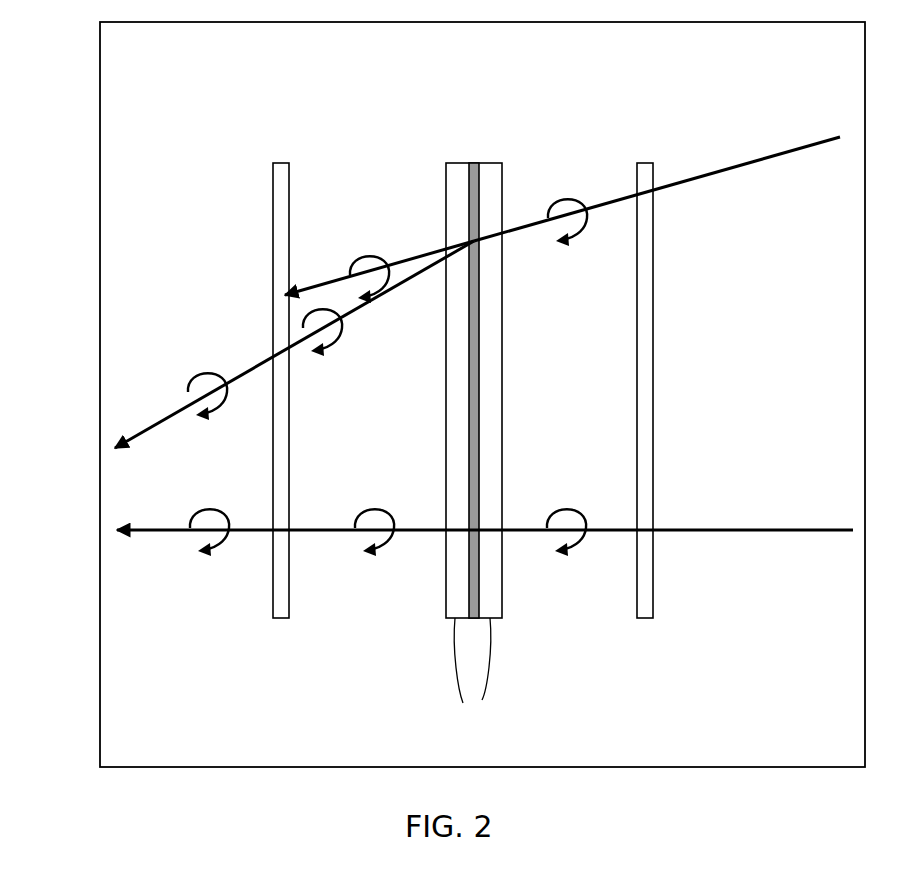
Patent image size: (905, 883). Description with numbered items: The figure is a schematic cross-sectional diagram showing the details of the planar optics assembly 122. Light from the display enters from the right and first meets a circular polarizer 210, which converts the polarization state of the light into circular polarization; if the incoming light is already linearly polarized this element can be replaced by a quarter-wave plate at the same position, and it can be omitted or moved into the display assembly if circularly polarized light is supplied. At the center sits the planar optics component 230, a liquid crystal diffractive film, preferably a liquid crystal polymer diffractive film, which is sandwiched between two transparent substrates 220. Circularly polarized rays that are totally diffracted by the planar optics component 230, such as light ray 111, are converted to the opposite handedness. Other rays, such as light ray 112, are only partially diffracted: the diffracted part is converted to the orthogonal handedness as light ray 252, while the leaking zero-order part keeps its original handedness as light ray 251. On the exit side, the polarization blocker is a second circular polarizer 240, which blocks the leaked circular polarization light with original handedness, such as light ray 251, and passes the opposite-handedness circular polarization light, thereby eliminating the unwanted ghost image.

The light ray 111 is at (695, 530).
The light ray 112 is at (683, 185).
The planar optics assembly 122 is at (100, 115).
The circular polarizer 210 is at (653, 165).
The transparent substrates 220 is at (472, 674).
The planar optics component 230 is at (477, 162).
The second circular polarizer 240 is at (273, 192).
The light ray 251 is at (433, 252).
The light ray 252 is at (353, 317).